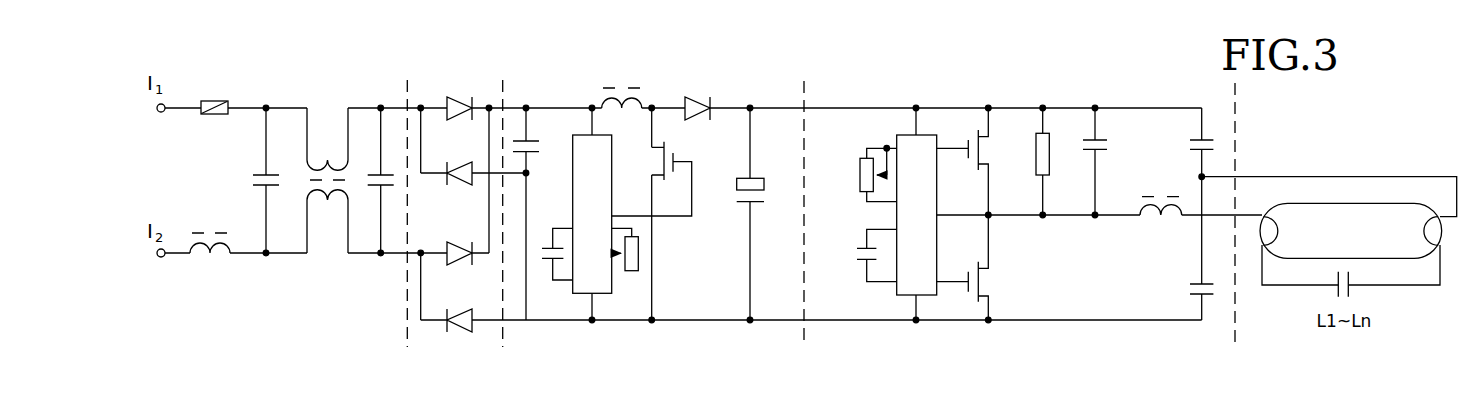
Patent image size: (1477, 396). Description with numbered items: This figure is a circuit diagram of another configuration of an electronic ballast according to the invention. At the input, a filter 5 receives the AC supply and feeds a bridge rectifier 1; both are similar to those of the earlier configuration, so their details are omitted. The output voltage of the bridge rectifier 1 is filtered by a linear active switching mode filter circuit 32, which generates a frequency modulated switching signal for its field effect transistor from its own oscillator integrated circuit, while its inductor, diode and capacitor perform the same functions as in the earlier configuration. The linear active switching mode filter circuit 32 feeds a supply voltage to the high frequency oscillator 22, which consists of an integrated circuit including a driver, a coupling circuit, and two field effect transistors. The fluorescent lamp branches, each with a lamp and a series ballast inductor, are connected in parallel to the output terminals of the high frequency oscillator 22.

The bridge rectifier 1 is at (470, 347).
The filter 5 is at (331, 267).
The linear active switching mode filter circuit 32 is at (649, 338).
The high frequency oscillator 22 is at (1055, 333).